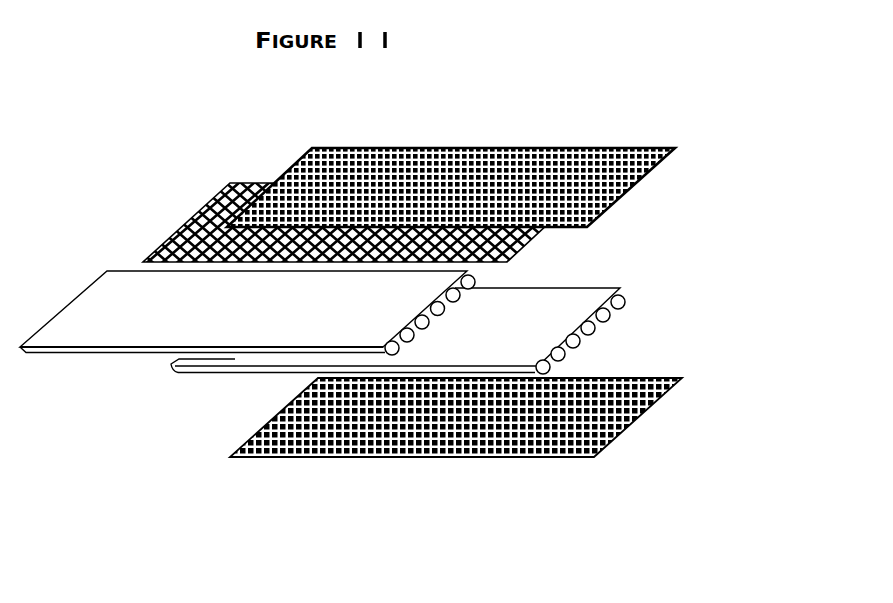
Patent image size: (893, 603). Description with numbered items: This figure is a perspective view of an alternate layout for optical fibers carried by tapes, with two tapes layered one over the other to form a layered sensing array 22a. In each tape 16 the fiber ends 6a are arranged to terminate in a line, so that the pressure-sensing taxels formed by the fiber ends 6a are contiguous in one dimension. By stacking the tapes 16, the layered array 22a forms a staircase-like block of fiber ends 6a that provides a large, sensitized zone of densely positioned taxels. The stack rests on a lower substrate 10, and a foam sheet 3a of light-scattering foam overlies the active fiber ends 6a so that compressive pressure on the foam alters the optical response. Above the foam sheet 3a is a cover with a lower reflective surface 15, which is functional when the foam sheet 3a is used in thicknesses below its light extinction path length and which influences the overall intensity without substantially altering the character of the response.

The lower substrate 10 is at (512, 461).
The layered array 22a is at (155, 375).
The tape 16 is at (103, 301).
The fiber ends 6a is at (474, 283).
The foam sheet 3a is at (197, 234).
The lower reflective surface 15 is at (598, 146).